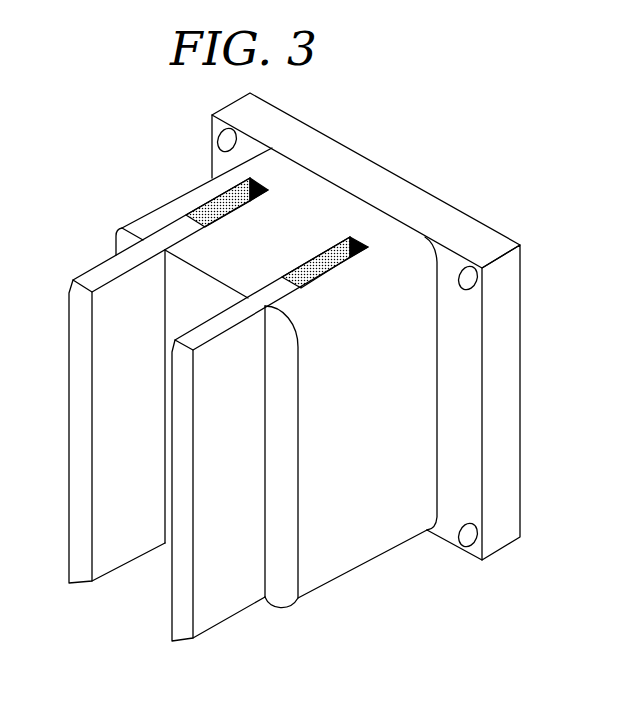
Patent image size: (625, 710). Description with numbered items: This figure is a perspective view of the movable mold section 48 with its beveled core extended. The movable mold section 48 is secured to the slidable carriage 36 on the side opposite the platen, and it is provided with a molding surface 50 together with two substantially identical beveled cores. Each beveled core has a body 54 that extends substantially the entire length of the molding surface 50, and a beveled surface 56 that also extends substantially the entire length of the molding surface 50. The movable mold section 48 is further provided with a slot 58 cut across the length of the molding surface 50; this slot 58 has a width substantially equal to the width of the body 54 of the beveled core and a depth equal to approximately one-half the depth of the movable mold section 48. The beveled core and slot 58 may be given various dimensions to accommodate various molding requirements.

The slidable carriage 36 is at (430, 210).
The movable mold section 48 is at (308, 193).
The molding surface 50 is at (200, 298).
The body 54 is at (262, 430).
The beveled surface 56 is at (182, 525).
The slot 58 is at (330, 247).